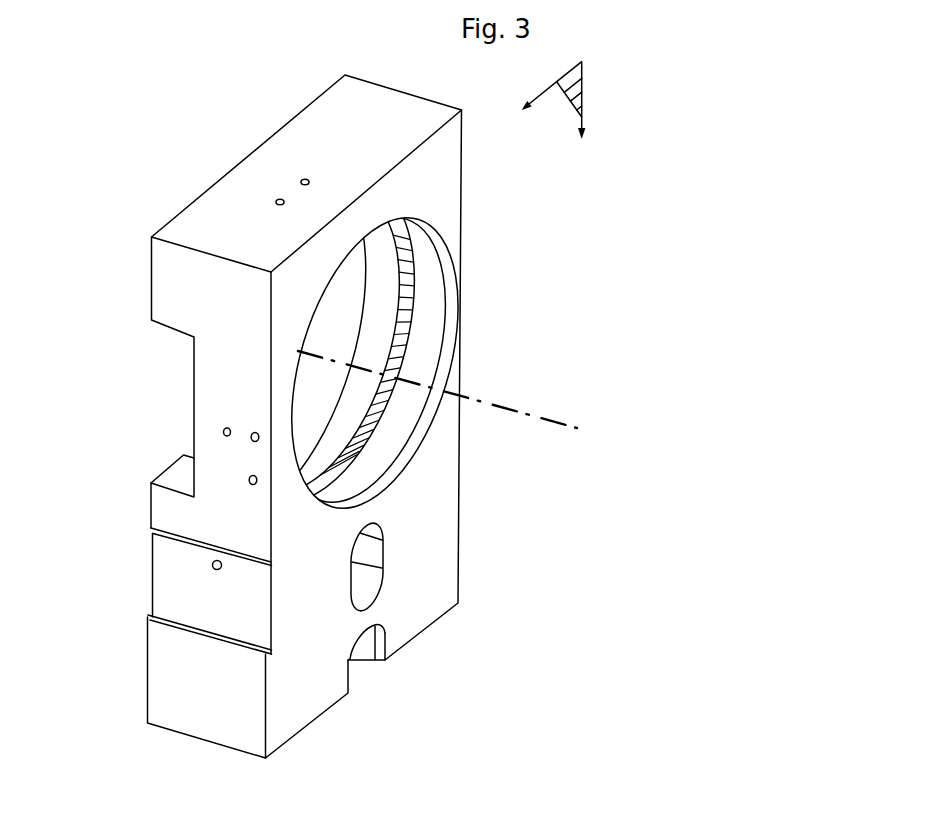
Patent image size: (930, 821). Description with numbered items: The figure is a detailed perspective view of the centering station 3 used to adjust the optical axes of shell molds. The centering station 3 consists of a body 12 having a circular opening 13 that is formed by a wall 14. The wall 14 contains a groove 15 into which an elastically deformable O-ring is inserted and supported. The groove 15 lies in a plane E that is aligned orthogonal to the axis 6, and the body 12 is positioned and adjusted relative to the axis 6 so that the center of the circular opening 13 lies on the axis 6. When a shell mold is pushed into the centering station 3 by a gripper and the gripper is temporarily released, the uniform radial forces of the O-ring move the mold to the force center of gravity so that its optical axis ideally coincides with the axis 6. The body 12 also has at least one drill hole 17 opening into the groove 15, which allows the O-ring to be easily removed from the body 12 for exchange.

The centering station 3 is at (470, 481).
The axis 6 is at (506, 403).
The body 12 is at (440, 558).
The circular opening 13 is at (359, 336).
The wall 14 is at (405, 348).
The groove 15 is at (403, 250).
The drill hole 17 is at (223, 432).
The plane E is at (584, 84).